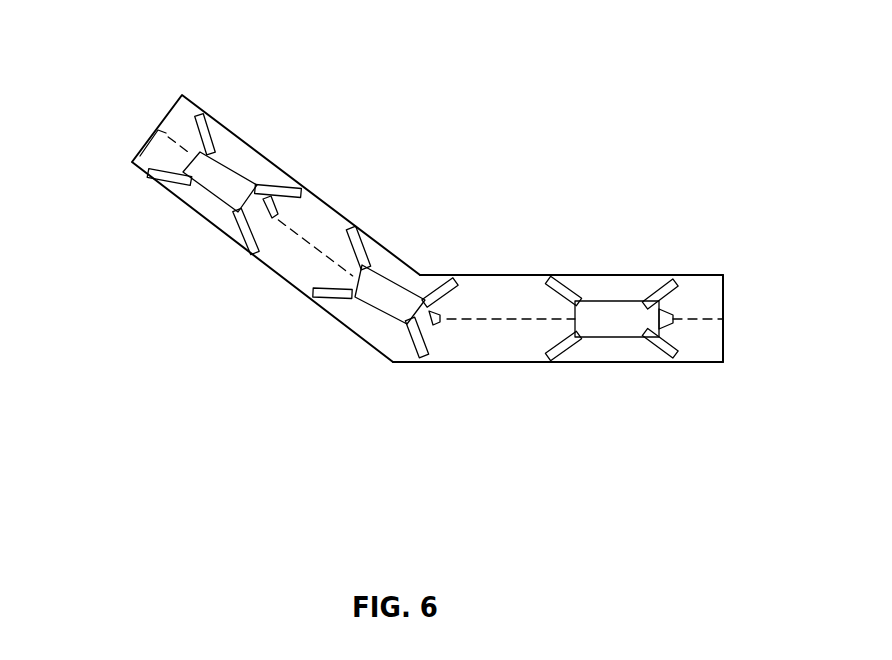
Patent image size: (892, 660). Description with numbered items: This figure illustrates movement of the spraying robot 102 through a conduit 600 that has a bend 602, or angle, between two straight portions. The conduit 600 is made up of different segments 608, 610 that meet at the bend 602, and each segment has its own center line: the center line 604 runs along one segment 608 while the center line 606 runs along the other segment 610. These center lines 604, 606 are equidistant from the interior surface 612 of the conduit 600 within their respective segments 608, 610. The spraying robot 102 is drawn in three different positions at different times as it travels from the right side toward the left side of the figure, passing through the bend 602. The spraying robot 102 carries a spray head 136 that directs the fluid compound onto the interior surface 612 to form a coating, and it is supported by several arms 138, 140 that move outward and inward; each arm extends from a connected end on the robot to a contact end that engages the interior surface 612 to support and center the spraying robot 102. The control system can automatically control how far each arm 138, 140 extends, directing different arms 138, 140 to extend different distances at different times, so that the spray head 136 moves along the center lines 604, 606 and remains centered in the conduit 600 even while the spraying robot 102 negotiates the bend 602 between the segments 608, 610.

The spraying robot 102 is at (404, 280).
The spray head 136 is at (297, 188).
The arm 138 is at (554, 281).
The arm 140 is at (455, 279).
The conduit 600 is at (293, 286).
The bend 602 is at (434, 244).
The center line 604 is at (512, 321).
The center line 606 is at (132, 162).
The segment 608 is at (725, 445).
The segment 610 is at (238, 21).
The interior surface 612 is at (704, 290).